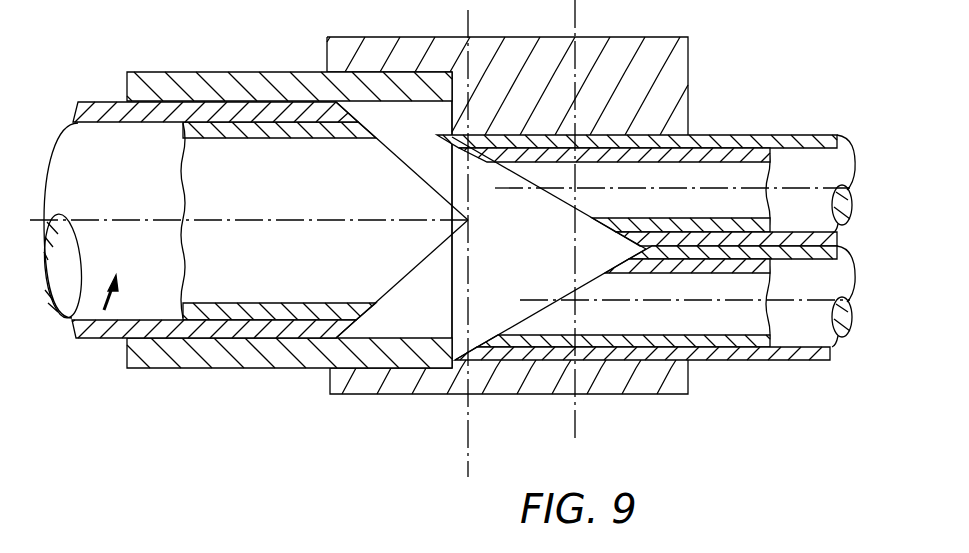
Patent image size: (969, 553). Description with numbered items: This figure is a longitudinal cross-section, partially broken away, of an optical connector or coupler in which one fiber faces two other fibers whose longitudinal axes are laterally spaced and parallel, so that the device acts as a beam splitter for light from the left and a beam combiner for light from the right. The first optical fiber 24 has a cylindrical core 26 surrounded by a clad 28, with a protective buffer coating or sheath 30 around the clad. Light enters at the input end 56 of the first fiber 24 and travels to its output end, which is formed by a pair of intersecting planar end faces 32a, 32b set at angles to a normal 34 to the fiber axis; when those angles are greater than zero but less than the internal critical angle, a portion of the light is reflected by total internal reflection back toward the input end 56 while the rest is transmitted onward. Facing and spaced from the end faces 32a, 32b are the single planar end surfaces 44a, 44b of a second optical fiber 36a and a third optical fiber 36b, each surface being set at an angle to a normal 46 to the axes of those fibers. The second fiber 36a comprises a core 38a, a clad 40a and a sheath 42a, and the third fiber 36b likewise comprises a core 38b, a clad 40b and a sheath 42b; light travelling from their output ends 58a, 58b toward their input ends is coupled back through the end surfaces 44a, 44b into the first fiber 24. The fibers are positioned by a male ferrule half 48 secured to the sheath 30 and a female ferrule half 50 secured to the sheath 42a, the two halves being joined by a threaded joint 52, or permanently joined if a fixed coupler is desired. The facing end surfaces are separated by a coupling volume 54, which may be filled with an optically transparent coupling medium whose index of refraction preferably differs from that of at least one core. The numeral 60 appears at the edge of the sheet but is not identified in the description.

The first optical fiber 24 is at (103, 318).
The core 26 is at (43, 238).
The clad 28 is at (52, 298).
The sheath 30 is at (99, 117).
The planar end face 32a is at (383, 345).
The planar end face 32b is at (390, 132).
The normal 34 is at (466, 26).
The second optical fiber 36a is at (796, 322).
The third optical fiber 36b is at (810, 168).
The core 38a is at (845, 336).
The core 38b is at (848, 190).
The clad 40a is at (838, 351).
The clad 40b is at (838, 226).
The sheath 42a is at (745, 360).
The sheath 42b is at (785, 135).
The planar end surface 44a is at (600, 280).
The planar end surface 44b is at (505, 187).
The normal 46 is at (575, 4).
The male ferrule half 48 is at (216, 88).
The female ferrule half 50 is at (530, 372).
The threaded joint 52 is at (438, 396).
The coupling volume 54 is at (526, 276).
The input end 56 is at (54, 155).
The output end 58a is at (845, 322).
The output end 58b is at (841, 150).
The light source 60 is at (160, 549).